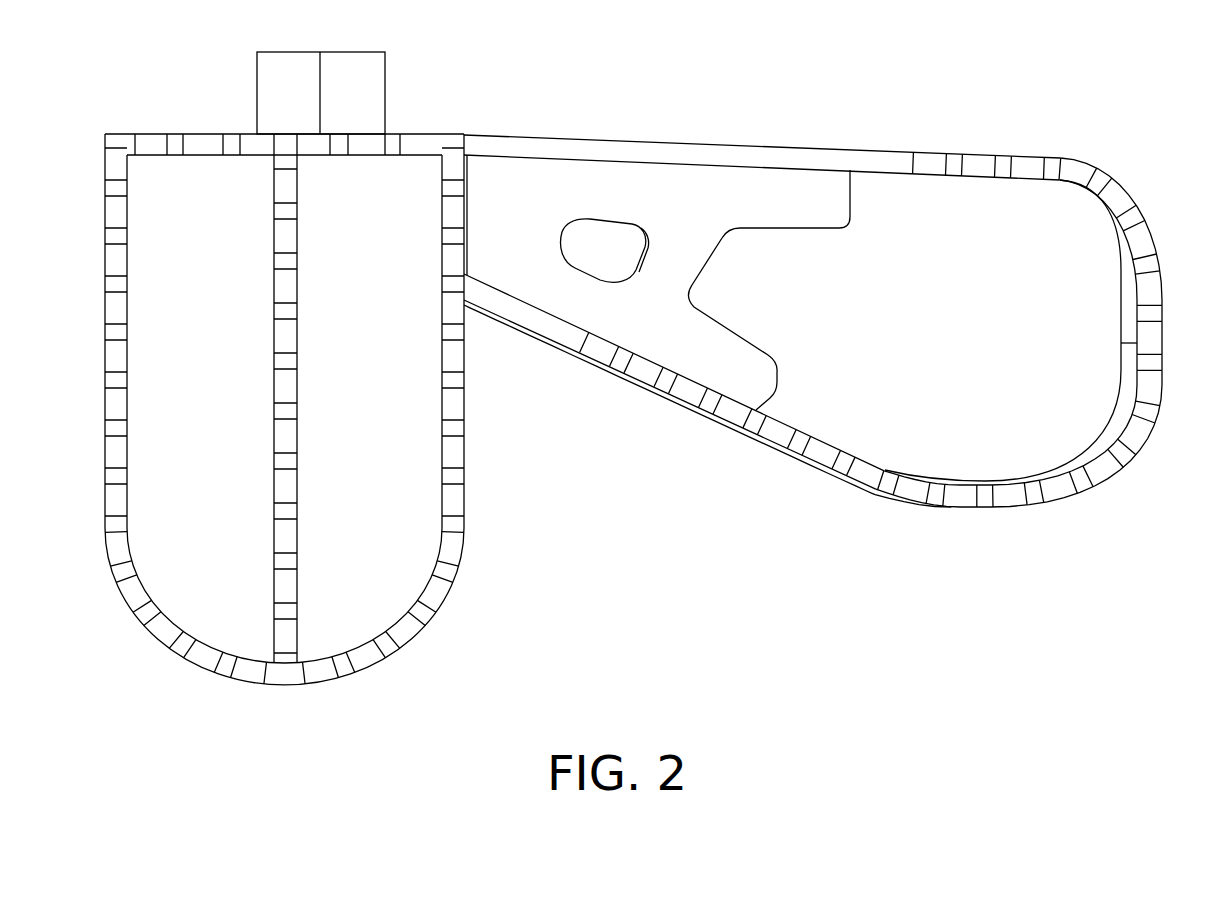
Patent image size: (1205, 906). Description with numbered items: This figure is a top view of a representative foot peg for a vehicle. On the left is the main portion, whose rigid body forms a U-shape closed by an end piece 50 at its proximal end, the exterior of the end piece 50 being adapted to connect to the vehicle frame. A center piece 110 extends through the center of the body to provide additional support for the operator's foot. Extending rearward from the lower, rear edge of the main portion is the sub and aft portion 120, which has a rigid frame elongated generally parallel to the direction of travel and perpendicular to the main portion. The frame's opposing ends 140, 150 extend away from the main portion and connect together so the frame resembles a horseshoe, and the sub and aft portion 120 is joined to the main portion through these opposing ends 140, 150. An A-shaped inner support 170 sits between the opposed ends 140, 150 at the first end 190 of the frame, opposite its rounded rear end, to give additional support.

The end piece 50 is at (320, 156).
The center piece 110 is at (296, 437).
The sub and aft portion 120 is at (813, 275).
The opposing end 140 is at (718, 143).
The opposing end 150 is at (700, 417).
The inner support 170 is at (697, 268).
The first end 190 is at (465, 220).